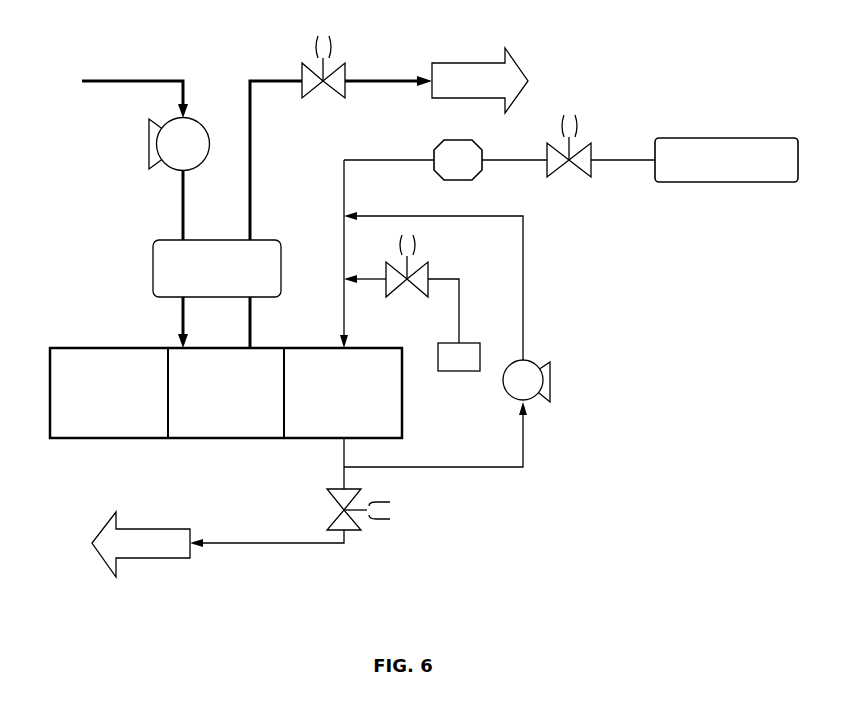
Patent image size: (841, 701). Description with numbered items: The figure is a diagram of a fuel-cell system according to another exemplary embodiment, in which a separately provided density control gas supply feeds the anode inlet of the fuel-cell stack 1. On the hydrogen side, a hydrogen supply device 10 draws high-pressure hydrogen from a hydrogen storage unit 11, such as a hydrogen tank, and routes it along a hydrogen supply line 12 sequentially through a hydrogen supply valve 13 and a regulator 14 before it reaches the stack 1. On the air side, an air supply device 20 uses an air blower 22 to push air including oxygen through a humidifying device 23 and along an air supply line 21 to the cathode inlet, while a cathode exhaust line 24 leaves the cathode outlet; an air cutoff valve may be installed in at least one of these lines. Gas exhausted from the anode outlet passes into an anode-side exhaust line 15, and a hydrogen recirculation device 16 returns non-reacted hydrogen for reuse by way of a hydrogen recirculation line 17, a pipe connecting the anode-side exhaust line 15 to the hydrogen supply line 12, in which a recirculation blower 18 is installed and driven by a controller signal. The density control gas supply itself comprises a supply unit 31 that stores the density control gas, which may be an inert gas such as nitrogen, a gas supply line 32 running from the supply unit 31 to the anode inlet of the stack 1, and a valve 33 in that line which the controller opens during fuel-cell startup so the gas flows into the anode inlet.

The fuel-cell stack 1 is at (66, 446).
The hydrogen supply device 10 is at (588, 192).
The hydrogen storage unit 11 is at (729, 182).
The hydrogen supply line 12 is at (620, 160).
The hydrogen supply valve 13 is at (591, 143).
The regulator 14 is at (440, 142).
The anode-side exhaust line 15 is at (275, 543).
The hydrogen recirculation device 16 is at (556, 452).
The hydrogen recirculation line 17 is at (523, 312).
The recirculation blower 18 is at (550, 380).
The air supply device 20 is at (114, 114).
The air supply line 21 is at (183, 206).
The air blower 22 is at (197, 120).
The humidifying device 23 is at (153, 268).
The cathode exhaust line 24 is at (250, 143).
The supply unit 31 is at (458, 371).
The gas supply line 32 is at (459, 322).
The valve 33 is at (428, 268).